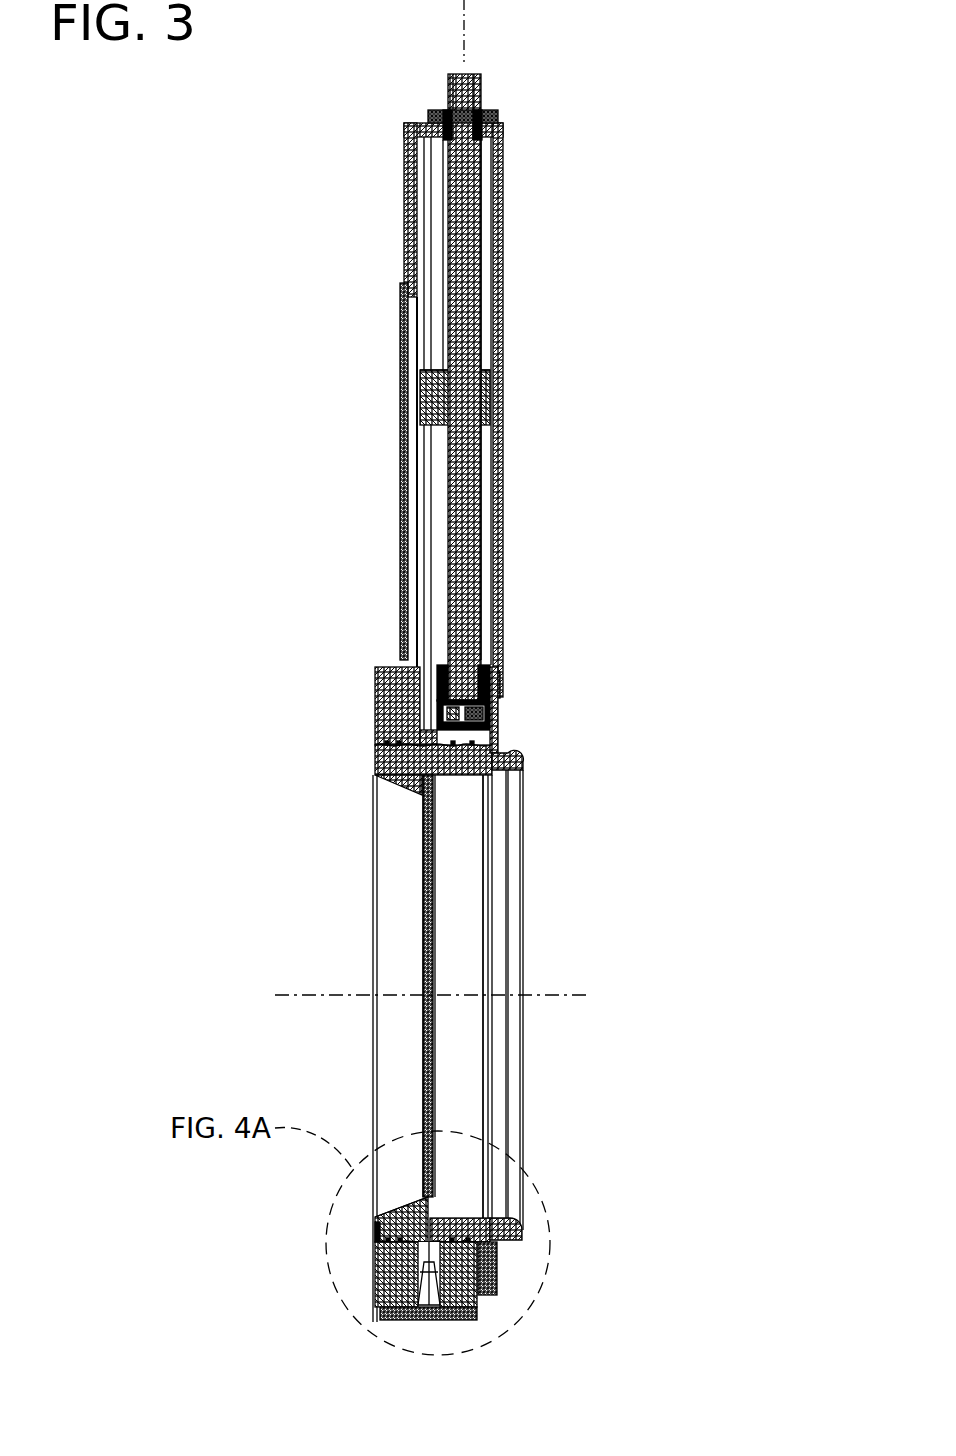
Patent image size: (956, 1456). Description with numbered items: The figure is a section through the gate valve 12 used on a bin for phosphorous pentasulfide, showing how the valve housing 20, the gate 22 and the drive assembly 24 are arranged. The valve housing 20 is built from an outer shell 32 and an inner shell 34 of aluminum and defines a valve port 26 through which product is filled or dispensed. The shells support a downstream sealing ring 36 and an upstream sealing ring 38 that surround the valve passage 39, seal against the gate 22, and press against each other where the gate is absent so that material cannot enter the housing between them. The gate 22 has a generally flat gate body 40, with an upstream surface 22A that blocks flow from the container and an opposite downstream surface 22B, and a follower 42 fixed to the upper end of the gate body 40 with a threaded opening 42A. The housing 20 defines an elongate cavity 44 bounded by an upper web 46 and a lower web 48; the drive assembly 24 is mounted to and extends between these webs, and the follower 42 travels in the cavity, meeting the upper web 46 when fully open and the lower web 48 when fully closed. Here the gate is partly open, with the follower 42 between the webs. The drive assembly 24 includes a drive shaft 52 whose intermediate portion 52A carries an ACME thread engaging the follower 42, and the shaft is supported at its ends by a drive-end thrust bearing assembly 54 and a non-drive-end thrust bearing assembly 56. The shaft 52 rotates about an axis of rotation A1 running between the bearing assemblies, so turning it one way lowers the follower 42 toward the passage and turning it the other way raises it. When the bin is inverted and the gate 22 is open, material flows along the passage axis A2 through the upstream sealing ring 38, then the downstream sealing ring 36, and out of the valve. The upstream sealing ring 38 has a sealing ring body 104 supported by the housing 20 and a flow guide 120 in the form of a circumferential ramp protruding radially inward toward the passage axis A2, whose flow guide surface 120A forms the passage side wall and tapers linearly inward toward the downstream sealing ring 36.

The valve 12 is at (765, 295).
The valve housing 20 is at (404, 208).
The gate 22 is at (423, 840).
The upstream surface 22A is at (423, 878).
The downstream surface 22B is at (485, 862).
The drive assembly 24 is at (440, 178).
The valve port 26 is at (500, 770).
The outer shell 32 is at (497, 738).
The inner shell 34 is at (404, 265).
The downstream sealing ring 36 is at (498, 1228).
The upstream sealing ring 38 is at (378, 1250).
The valve passage 39 is at (398, 1065).
The gate body 40 is at (435, 965).
The follower 42 is at (496, 420).
The threaded opening 42A is at (472, 392).
The elongate cavity 44 is at (492, 314).
The upper web 46 is at (428, 122).
The lower web 48 is at (497, 680).
The drive shaft 52 is at (482, 470).
The intermediate portion 52A is at (481, 273).
The drive-end thrust bearing assembly 54 is at (490, 160).
The non-drive-end thrust bearing assembly 56 is at (508, 713).
The sealing ring body 104 is at (378, 1232).
The flow guide 120 is at (408, 1200).
The flow guide surface 120A is at (376, 1222).
The axis of rotation A1 is at (503, 31).
The passage axis A2 is at (411, 995).